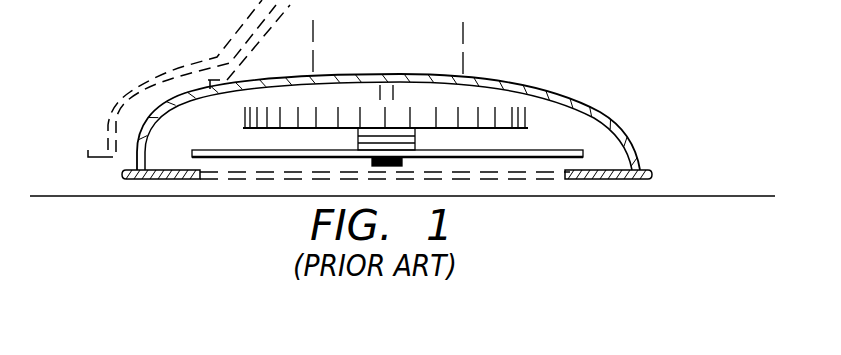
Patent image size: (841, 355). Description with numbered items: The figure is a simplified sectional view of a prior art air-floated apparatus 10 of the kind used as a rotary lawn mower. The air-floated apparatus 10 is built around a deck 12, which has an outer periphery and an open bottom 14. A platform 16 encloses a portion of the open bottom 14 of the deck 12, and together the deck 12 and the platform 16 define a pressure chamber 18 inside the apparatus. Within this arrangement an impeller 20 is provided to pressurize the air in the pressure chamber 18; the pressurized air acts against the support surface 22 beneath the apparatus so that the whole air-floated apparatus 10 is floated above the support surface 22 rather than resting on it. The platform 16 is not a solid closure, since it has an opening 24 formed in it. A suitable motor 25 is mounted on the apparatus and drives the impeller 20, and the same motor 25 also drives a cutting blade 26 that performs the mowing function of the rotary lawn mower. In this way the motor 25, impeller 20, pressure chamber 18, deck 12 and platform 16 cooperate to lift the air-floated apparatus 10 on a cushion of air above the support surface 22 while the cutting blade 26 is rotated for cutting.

The air-floated apparatus 10 is at (388, 100).
The deck 12 is at (517, 84).
The open bottom 14 is at (184, 160).
The platform 16 is at (643, 170).
The pressure chamber 18 is at (569, 142).
The impeller 20 is at (447, 108).
The support surface 22 is at (707, 195).
The opening 24 is at (572, 172).
The motor 25 is at (380, 46).
The cutting blade 26 is at (243, 158).